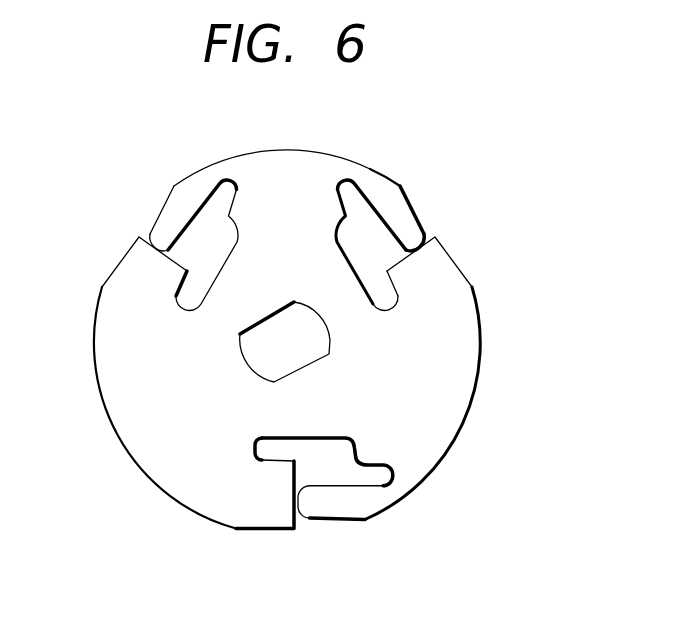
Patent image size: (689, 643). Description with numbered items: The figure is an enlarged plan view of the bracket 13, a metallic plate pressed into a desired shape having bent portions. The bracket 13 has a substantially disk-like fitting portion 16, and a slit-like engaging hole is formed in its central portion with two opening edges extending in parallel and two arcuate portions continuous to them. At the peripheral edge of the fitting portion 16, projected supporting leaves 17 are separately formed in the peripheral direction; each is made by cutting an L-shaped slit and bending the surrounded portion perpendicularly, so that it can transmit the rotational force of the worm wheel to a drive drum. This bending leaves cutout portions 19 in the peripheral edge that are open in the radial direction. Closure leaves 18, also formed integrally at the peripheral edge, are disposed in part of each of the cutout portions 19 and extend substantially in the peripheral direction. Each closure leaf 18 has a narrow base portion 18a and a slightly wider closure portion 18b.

The bracket 13 is at (480, 370).
The fitting portion 16 is at (450, 327).
The projected supporting leaves 17 is at (145, 238).
The closure leaves 18 is at (165, 200).
The base portion 18a is at (215, 174).
The closure portion 18b is at (163, 240).
The cutout portions 19 is at (192, 291).